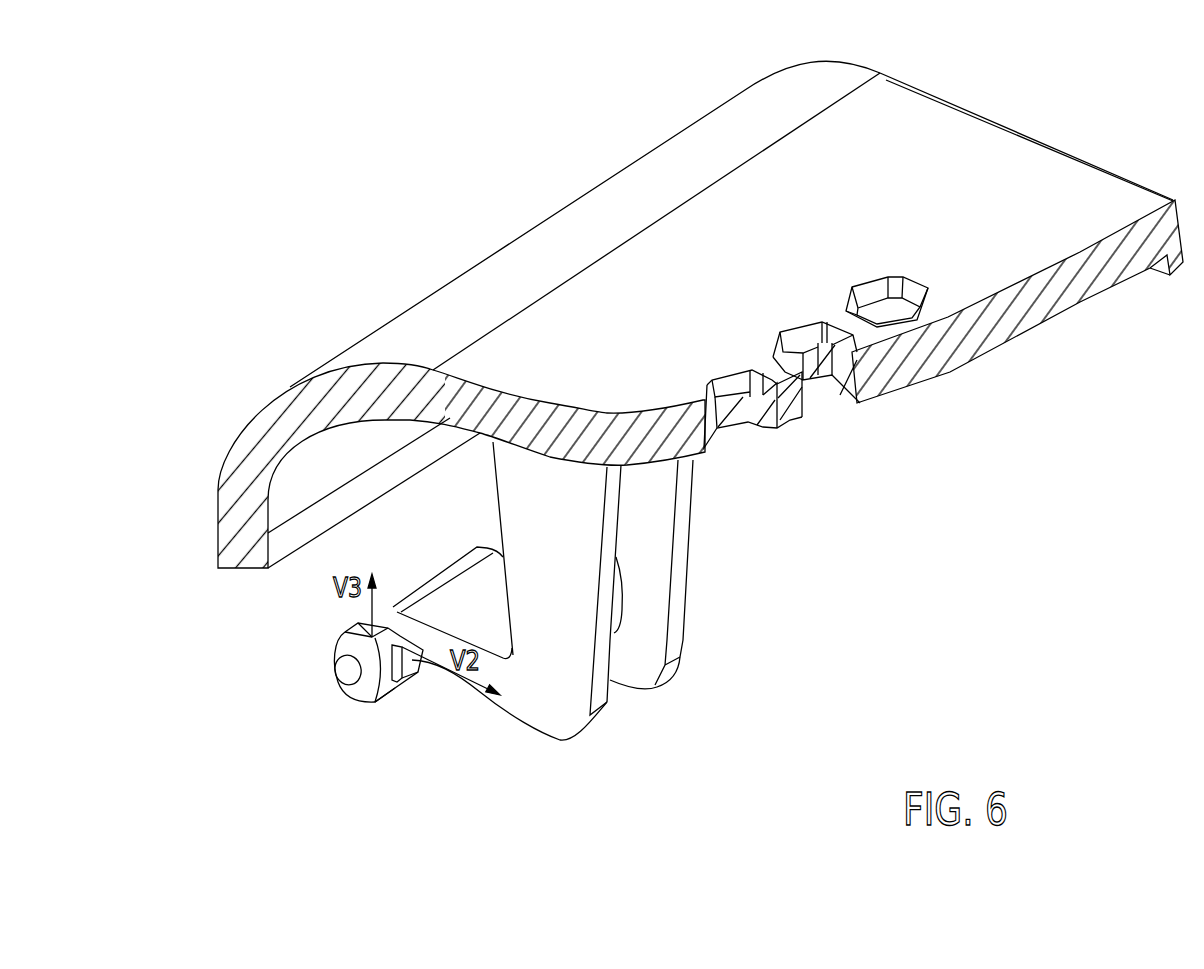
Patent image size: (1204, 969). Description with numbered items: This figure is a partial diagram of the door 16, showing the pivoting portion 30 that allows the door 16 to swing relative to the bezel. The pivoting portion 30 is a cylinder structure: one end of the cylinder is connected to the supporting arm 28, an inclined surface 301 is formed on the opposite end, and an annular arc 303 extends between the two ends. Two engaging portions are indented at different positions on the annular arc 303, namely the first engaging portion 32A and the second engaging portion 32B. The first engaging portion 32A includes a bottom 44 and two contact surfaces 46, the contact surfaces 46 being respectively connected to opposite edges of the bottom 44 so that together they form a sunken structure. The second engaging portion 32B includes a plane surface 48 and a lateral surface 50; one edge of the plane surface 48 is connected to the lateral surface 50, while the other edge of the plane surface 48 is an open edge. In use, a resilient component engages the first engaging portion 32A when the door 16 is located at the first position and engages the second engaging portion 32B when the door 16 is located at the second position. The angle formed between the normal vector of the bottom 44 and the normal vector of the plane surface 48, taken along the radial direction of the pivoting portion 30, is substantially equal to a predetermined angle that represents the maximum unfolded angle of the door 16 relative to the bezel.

The door 16 is at (691, 320).
The supporting arm 28 is at (567, 688).
The pivoting portion 30 is at (437, 573).
The annular arc 303 is at (392, 607).
The inclined surface 301 is at (367, 693).
The second engaging portion 32B is at (318, 699).
The lateral surface 50 is at (367, 627).
The plane surface 48 is at (363, 643).
The first engaging portion 32A is at (413, 726).
The bottom 44 is at (400, 668).
The contact surfaces 46 is at (477, 742).